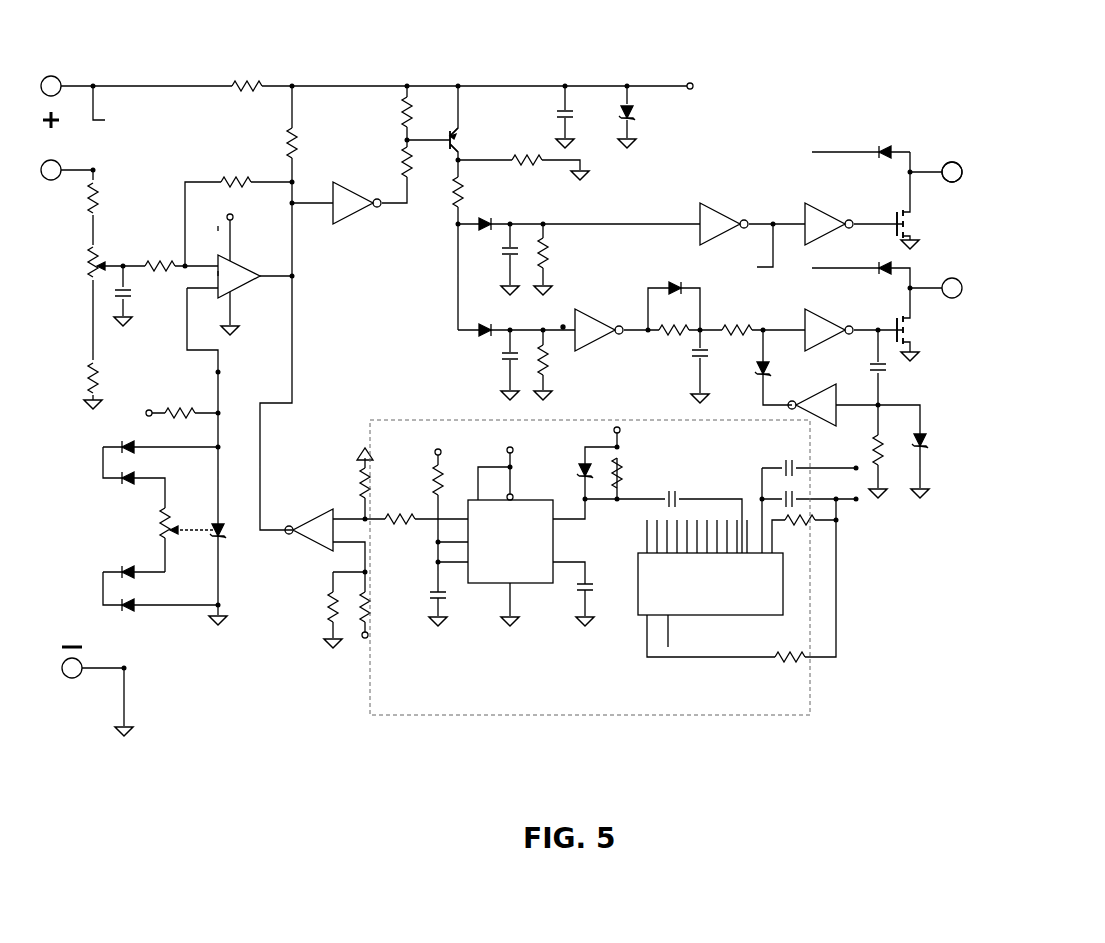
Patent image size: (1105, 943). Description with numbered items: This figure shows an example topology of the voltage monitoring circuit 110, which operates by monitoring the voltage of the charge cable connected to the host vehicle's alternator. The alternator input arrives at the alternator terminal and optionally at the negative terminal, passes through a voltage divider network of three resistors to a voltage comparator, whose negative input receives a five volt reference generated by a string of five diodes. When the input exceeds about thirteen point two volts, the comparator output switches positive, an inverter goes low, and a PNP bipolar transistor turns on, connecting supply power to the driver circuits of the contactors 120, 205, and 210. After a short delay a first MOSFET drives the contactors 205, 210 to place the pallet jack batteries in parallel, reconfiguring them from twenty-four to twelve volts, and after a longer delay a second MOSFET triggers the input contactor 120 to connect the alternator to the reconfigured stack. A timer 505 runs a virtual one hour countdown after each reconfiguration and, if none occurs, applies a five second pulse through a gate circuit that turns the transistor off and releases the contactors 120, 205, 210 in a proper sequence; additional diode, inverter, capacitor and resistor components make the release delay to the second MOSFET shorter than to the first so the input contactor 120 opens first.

The voltage monitoring circuit 110 is at (1104, 18).
The timer 505 is at (590, 567).
The input contactor 120 is at (1022, 287).
The contactor 205 is at (1023, 172).
The contactor 210 is at (1012, 178).